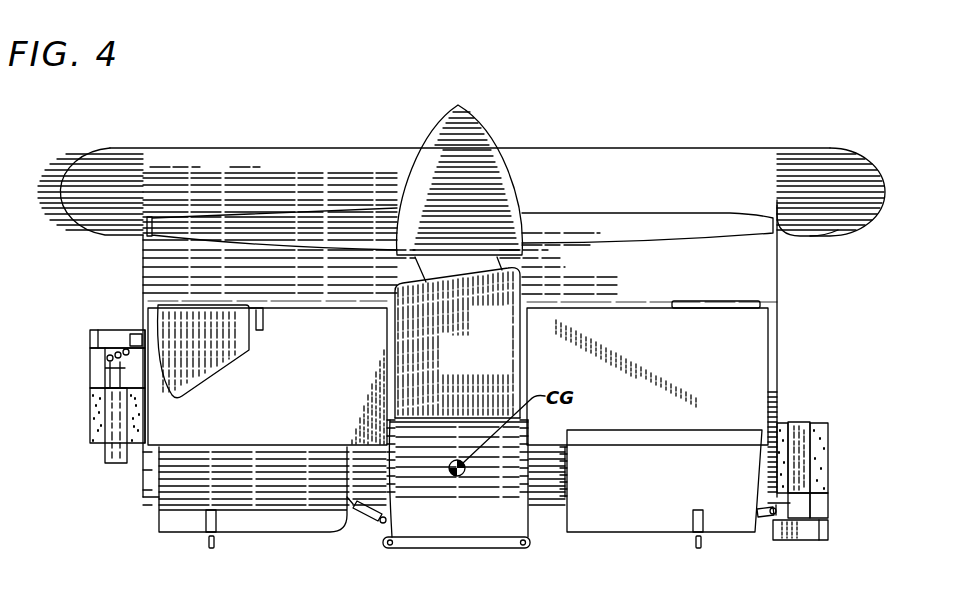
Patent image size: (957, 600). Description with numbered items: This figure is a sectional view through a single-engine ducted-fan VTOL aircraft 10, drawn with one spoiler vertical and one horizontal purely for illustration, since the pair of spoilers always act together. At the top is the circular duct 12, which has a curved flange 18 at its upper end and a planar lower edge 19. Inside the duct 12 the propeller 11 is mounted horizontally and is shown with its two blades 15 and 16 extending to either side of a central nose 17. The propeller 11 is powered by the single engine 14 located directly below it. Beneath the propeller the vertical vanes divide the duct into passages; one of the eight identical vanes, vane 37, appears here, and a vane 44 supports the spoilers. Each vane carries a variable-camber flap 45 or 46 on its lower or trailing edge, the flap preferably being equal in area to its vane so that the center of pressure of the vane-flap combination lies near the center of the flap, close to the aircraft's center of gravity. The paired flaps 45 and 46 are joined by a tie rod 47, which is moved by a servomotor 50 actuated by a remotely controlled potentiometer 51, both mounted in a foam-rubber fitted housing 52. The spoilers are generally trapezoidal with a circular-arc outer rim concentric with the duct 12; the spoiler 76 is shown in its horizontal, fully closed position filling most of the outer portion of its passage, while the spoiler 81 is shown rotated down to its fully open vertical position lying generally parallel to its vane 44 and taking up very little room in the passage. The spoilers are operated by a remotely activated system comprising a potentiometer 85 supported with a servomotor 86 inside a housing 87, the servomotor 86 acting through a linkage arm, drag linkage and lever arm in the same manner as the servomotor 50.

The ducted-fan VTOL aircraft 10 is at (594, 116).
The propeller 11 is at (370, 180).
The duct 12 is at (172, 166).
The engine 14 is at (492, 300).
The blade 15 is at (284, 222).
The blade 16 is at (638, 218).
The nose 17 is at (493, 152).
The curved flange 18 is at (878, 174).
The planar lower edge 19 is at (833, 236).
The vane 37 is at (667, 474).
The vane 44 is at (342, 406).
The variable-camber flap 45 is at (522, 510).
The variable-camber flap 46 is at (392, 512).
The tie rod 47 is at (440, 548).
The servomotor 50 is at (808, 420).
The potentiometer 51 is at (802, 542).
The housing 52 is at (830, 478).
The spoiler 76 is at (735, 302).
The spoiler 81 is at (225, 360).
The potentiometer 85 is at (114, 333).
The servomotor 86 is at (114, 464).
The housing 87 is at (92, 413).